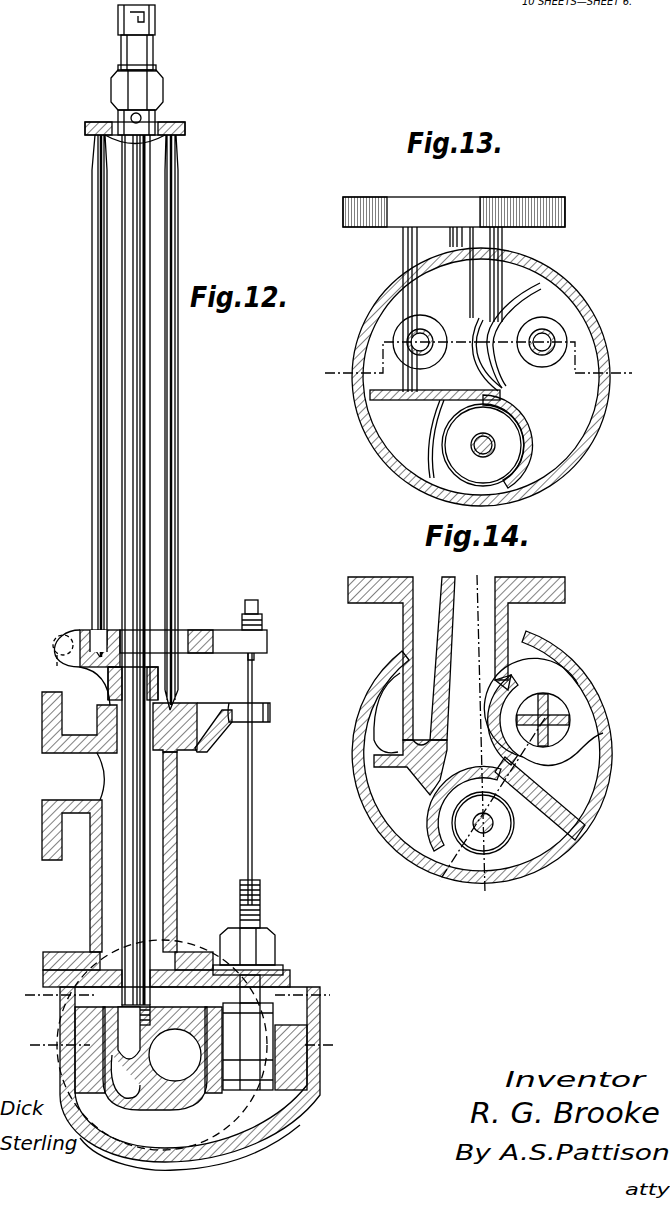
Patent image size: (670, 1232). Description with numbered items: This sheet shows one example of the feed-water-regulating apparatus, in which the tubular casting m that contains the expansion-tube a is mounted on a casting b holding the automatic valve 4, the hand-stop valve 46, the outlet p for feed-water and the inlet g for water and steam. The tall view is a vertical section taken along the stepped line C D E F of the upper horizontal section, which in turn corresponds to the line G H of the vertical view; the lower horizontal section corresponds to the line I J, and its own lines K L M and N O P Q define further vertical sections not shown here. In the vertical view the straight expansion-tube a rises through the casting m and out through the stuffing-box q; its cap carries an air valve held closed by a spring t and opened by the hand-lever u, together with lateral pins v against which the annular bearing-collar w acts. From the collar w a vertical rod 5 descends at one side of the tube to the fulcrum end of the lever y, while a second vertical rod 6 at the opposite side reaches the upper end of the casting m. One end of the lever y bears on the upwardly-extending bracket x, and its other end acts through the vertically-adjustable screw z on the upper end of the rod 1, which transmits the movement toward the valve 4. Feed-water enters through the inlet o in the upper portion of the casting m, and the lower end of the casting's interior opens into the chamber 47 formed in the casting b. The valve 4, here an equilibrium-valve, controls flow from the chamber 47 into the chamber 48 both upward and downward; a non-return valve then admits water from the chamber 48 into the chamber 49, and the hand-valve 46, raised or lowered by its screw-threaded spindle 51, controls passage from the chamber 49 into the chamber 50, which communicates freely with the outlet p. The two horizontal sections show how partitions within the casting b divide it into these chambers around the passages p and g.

In FIG. 12, the hand-lever u is at (160, 16).
In FIG. 12, the spring t is at (156, 50).
In FIG. 12, the lateral pins v is at (146, 118).
In FIG. 12, the annular bearing-collar w is at (92, 121).
In FIG. 12, the vertical rod 5 is at (90, 445).
In FIG. 12, the second vertical rod 6 is at (178, 443).
In FIG. 12, the expansion-tube a is at (136, 580).
In FIG. 12, the lever y is at (197, 628).
In FIG. 12, the vertically-adjustable screw z is at (262, 652).
In FIG. 12, the rod 1 is at (260, 784).
In FIG. 12, the bracket x is at (55, 692).
In FIG. 12, the water inlet branch o is at (79, 822).
In FIG. 12, the stuffing-box q is at (197, 743).
In FIG. 12, the tubular casting m is at (180, 828).
In FIG. 12, the casting b is at (300, 1105).
In FIG. 12, the chamber 48 is at (291, 1057).
In FIG. 14, the chamber 48 is at (549, 786).
In FIG. 12, the inlet g is at (122, 1095).
In FIG. 14, the inlet g is at (420, 637).
In FIG. 12, the outlet p is at (175, 1055).
In FIG. 13, the outlet p is at (410, 243).
In FIG. 14, the outlet p is at (497, 658).
In FIG. 12, the valve 4 is at (248, 985).
In FIG. 13, the valve 4 is at (545, 330).
In FIG. 12, the chamber 47 is at (90, 1079).
In FIG. 13, the chamber 47 is at (455, 305).
In FIG. 14, the chamber 47 is at (410, 738).
In FIG. 12, the section line G H G is at (49, 995).
In FIG. 12, the section line G H is at (311, 995).
In FIG. 12, the section line I J I is at (48, 1047).
In FIG. 12, the section line I J is at (323, 1047).
In FIG. 13, the chamber 50 is at (451, 439).
In FIG. 14, the chamber 50 is at (400, 818).
In FIG. 13, the hand-stop valve 46 is at (515, 442).
In FIG. 13, the screw-threaded spindle 51 is at (470, 447).
In FIG. 13, the section line C D E F D is at (412, 342).
In FIG. 13, the section line C D E F E is at (552, 342).
In FIG. 13, the section line C D E F C is at (398, 363).
In FIG. 13, the section line C D E F is at (561, 363).
In FIG. 14, the section line N O P Q is at (545, 722).
In FIG. 14, the chamber 49 is at (486, 810).
In FIG. 14, the section line N O P Q O is at (491, 819).
In FIG. 14, the section line N O P Q P is at (543, 720).
In FIG. 14, the section line K L M L is at (460, 733).
In FIG. 14, the section line K L M K is at (487, 723).
In FIG. 14, the section line K L M is at (490, 887).
In FIG. 14, the section line N O P Q N is at (440, 868).